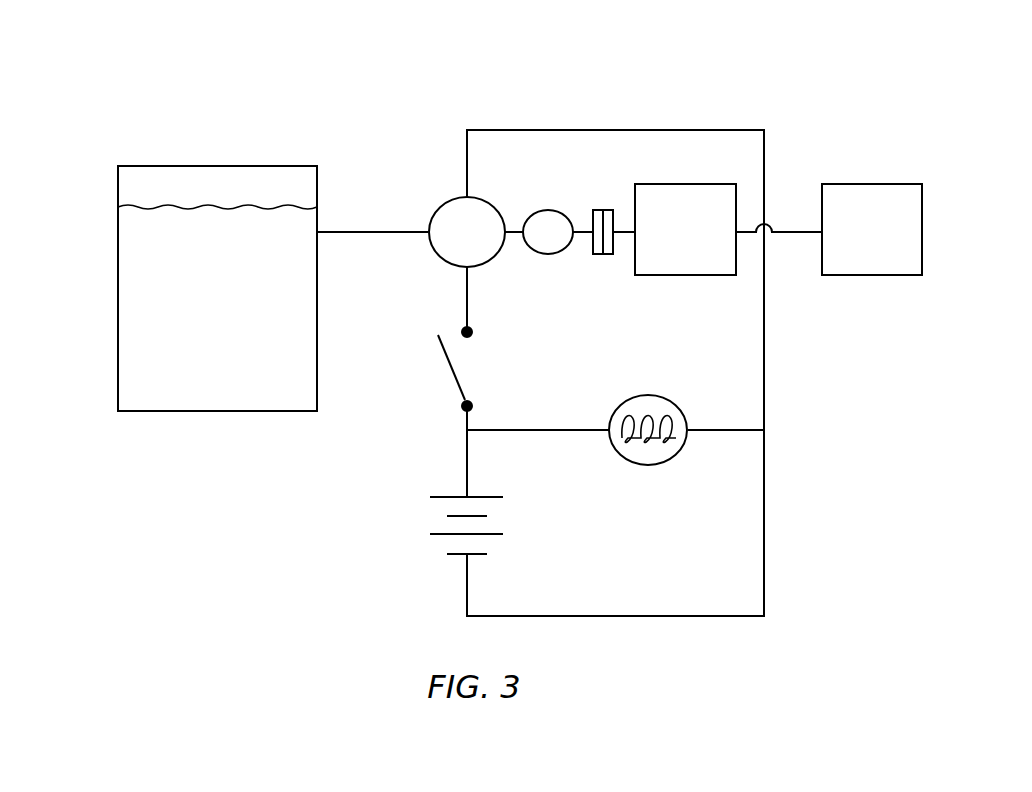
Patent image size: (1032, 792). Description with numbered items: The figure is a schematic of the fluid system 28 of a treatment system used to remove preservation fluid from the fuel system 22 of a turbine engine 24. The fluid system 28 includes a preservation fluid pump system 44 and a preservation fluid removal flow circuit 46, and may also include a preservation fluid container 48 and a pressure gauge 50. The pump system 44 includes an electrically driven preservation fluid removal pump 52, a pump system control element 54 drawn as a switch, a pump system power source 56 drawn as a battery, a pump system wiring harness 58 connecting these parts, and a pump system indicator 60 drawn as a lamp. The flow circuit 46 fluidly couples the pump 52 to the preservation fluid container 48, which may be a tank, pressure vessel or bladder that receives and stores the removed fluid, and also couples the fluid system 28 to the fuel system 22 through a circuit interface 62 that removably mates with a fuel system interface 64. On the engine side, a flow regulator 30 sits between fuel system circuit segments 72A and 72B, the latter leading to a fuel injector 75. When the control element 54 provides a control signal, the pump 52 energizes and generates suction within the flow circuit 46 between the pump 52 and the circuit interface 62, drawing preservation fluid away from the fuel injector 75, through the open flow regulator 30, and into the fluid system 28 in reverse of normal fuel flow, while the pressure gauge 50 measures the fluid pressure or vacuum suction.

The fluid system 28 is at (284, 107).
The fuel system 22 is at (605, 317).
The turbine engine 24 is at (772, 103).
The preservation fluid removal flow circuit 46 is at (360, 213).
The preservation fluid container 48 is at (116, 353).
The preservation fluid removal pump 52 is at (441, 193).
The pressure gauge 50 is at (548, 258).
The circuit interface 62 is at (587, 236).
The fuel system interface 64 is at (607, 256).
The fuel system circuit segment 72A is at (627, 231).
The fuel system circuit segment 72B is at (795, 231).
The flow regulator 30 is at (683, 280).
The fuel injector 75 is at (865, 280).
The pump system control element 54 is at (438, 397).
The preservation fluid pump system 44 is at (395, 538).
The pump system power source 56 is at (413, 549).
The pump system indicator 60 is at (662, 471).
The pump system wiring harness 58 is at (768, 511).